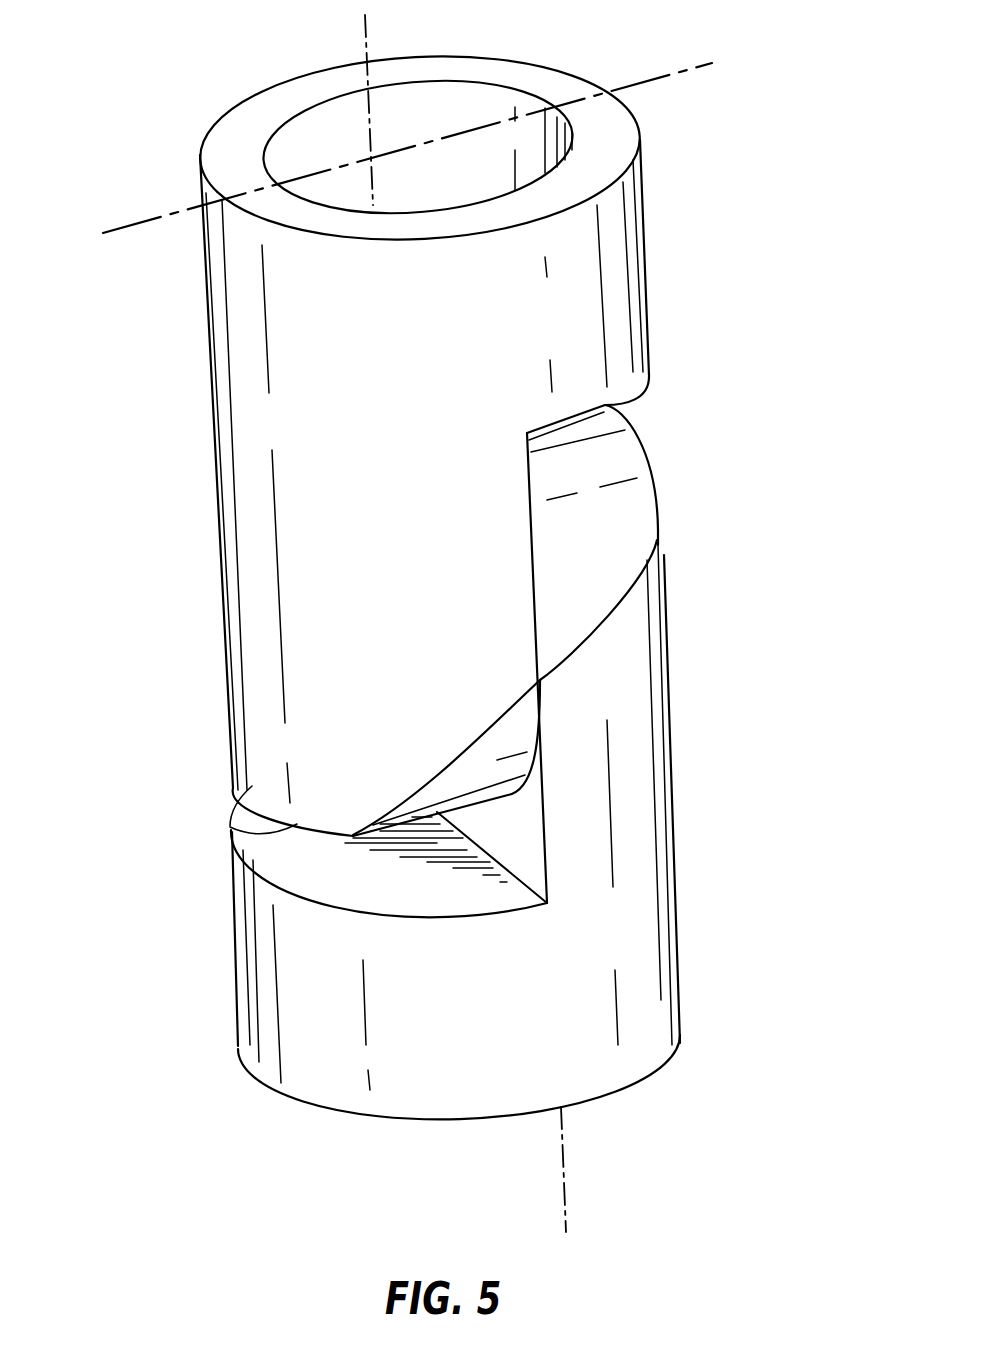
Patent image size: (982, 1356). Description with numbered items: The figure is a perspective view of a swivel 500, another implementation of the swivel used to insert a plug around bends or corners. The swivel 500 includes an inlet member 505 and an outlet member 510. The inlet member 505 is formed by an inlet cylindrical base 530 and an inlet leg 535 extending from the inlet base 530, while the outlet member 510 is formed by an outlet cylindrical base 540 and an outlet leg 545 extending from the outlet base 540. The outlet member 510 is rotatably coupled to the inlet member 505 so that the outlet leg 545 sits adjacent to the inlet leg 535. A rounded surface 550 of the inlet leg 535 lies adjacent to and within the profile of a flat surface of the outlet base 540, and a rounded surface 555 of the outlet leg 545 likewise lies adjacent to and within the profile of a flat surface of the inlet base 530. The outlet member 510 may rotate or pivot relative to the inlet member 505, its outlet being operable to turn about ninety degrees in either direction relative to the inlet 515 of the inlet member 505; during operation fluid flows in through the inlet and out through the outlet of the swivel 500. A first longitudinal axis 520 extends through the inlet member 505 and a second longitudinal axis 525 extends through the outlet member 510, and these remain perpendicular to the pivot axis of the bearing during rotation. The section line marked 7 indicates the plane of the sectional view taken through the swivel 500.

The swivel 500 is at (131, 130).
The inlet member 505 is at (172, 407).
The outlet member 510 is at (721, 884).
The inlet 515 is at (444, 106).
The first longitudinal axis 520 is at (367, 117).
The second longitudinal axis 525 is at (562, 1162).
The inlet cylindrical base 530 is at (622, 255).
The inlet leg 535 is at (313, 673).
The outlet cylindrical base 540 is at (298, 998).
The outlet leg 545 is at (638, 697).
The rounded surface 550 is at (230, 826).
The rounded surface 555 is at (608, 412).
The section line 7- 7 is at (703, 78).